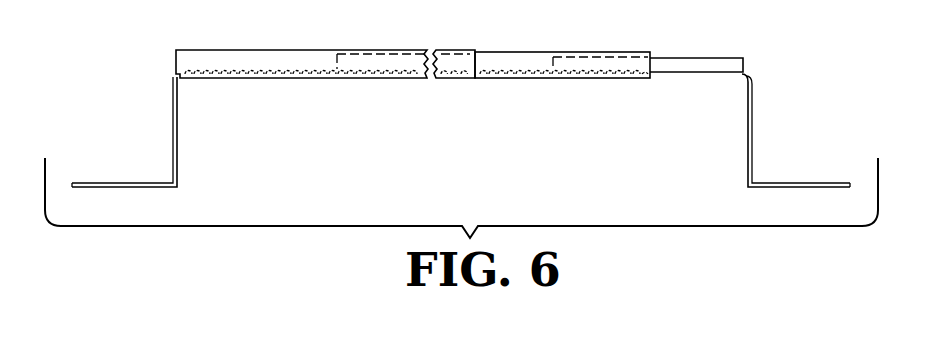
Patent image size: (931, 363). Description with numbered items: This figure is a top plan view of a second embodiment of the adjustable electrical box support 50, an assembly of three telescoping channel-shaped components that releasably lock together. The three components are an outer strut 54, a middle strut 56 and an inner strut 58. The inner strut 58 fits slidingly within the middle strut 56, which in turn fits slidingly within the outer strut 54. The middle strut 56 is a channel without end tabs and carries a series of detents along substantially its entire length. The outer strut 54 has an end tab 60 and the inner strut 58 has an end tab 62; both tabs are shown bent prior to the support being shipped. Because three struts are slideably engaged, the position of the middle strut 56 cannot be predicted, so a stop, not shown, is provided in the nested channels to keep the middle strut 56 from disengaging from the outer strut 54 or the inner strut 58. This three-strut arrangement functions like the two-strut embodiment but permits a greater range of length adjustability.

The electrical box support 50 is at (411, 91).
The outer strut 54 is at (270, 50).
The middle strut 56 is at (535, 57).
The inner strut 58 is at (680, 60).
The end tab 60 is at (174, 131).
The end tab 62 is at (755, 122).